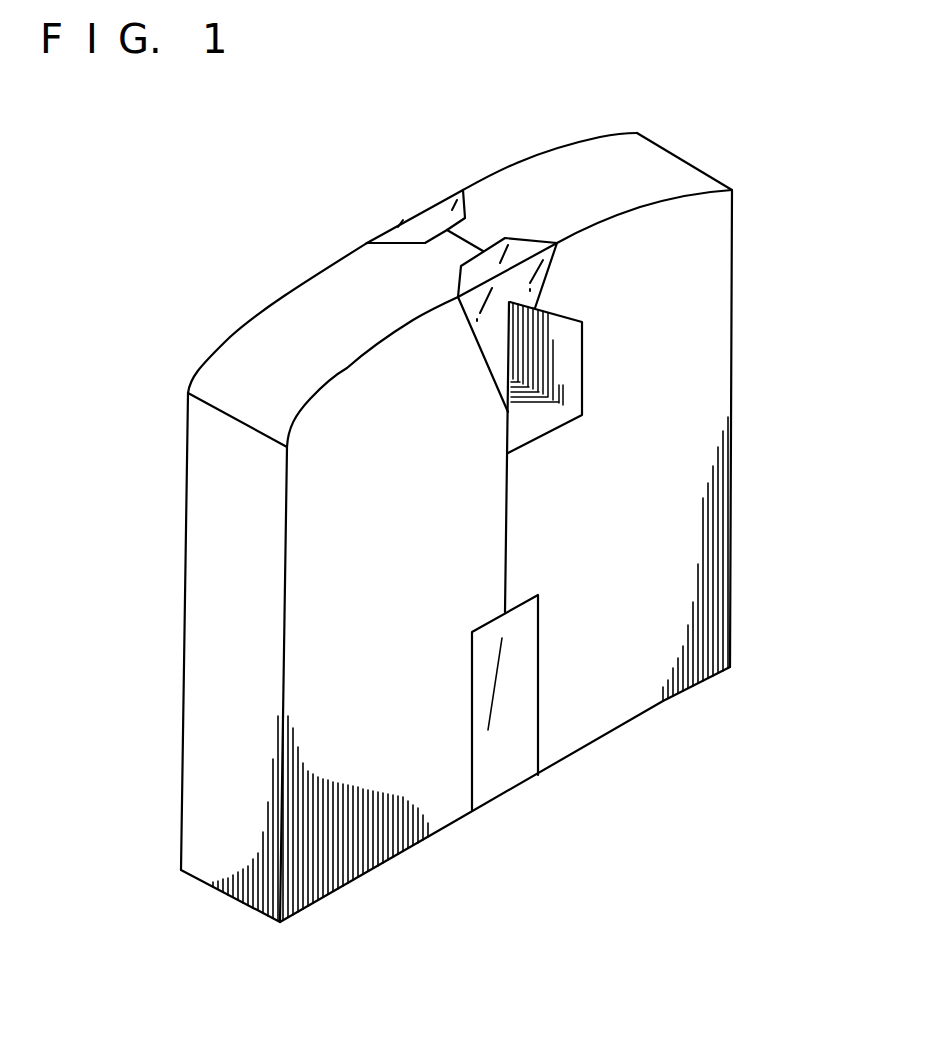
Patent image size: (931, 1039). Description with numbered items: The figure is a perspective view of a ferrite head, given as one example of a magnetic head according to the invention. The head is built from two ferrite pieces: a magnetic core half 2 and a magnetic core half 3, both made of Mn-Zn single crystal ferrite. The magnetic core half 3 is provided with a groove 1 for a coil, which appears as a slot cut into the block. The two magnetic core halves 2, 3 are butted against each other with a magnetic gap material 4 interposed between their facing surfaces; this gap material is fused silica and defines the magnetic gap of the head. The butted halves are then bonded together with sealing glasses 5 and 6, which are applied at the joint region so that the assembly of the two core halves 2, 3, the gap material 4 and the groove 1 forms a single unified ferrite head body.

The groove 1 is at (555, 355).
The magnetic core half 2 is at (223, 673).
The magnetic core half 3 is at (655, 548).
The magnetic gap material 4 is at (475, 247).
The sealing glass 5 is at (558, 277).
The sealing glass 6 is at (505, 743).